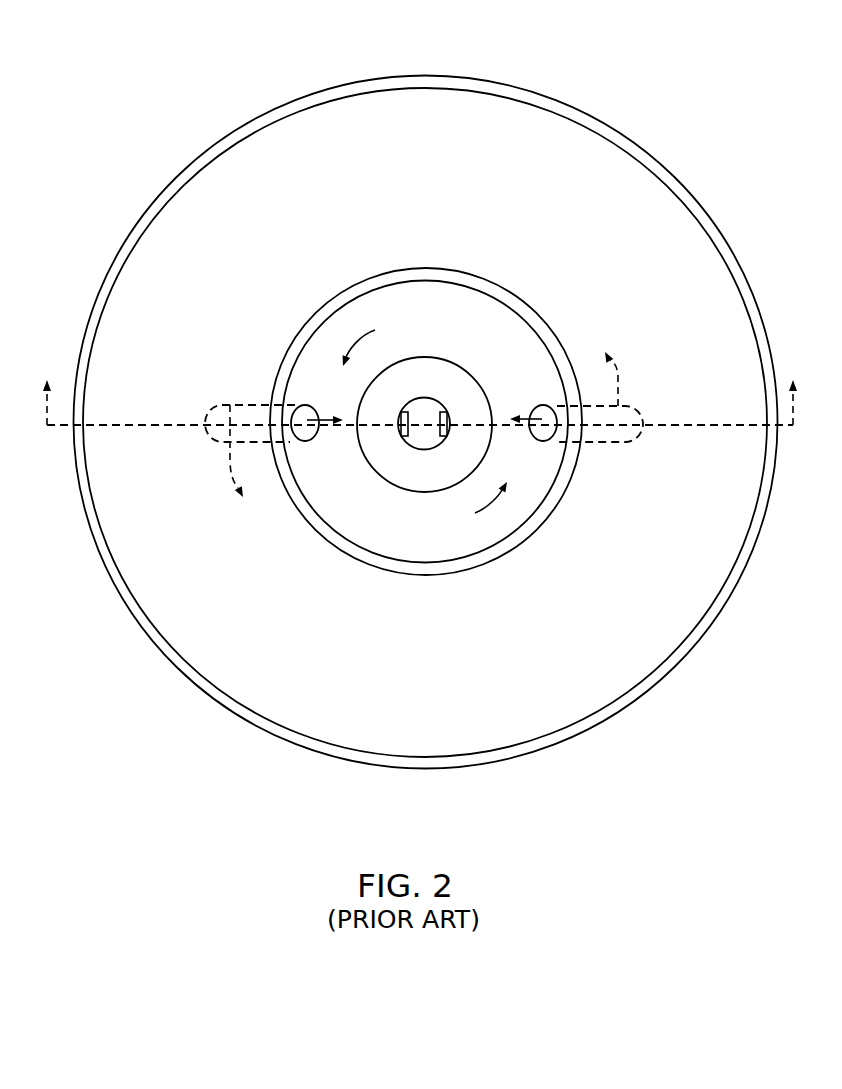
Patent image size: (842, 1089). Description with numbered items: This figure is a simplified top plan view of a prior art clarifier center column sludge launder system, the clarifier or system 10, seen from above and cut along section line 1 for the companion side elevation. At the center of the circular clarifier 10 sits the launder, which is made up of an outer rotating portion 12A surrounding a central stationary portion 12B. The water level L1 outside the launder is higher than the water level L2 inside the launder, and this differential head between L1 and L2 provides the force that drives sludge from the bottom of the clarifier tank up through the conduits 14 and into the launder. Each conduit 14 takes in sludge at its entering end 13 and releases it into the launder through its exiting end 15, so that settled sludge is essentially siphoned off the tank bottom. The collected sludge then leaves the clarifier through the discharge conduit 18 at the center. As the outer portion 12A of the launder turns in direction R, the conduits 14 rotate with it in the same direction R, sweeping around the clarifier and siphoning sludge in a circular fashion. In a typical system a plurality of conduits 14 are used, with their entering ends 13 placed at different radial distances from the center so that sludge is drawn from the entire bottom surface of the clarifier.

The clarifier system 10 is at (671, 50).
The water level outside launder L1 is at (267, 152).
The water level inside launder L2 is at (503, 338).
The outer rotating portion of launder 12A is at (360, 318).
The central stationary portion of launder 12B is at (445, 383).
The conduit entering end 13 is at (212, 416).
The conduit 14 is at (255, 405).
The conduit exiting end 15 is at (315, 444).
The discharge conduit 18 is at (423, 435).
The direction of rotation R is at (424, 425).
The section line 1- 1 is at (423, 387).